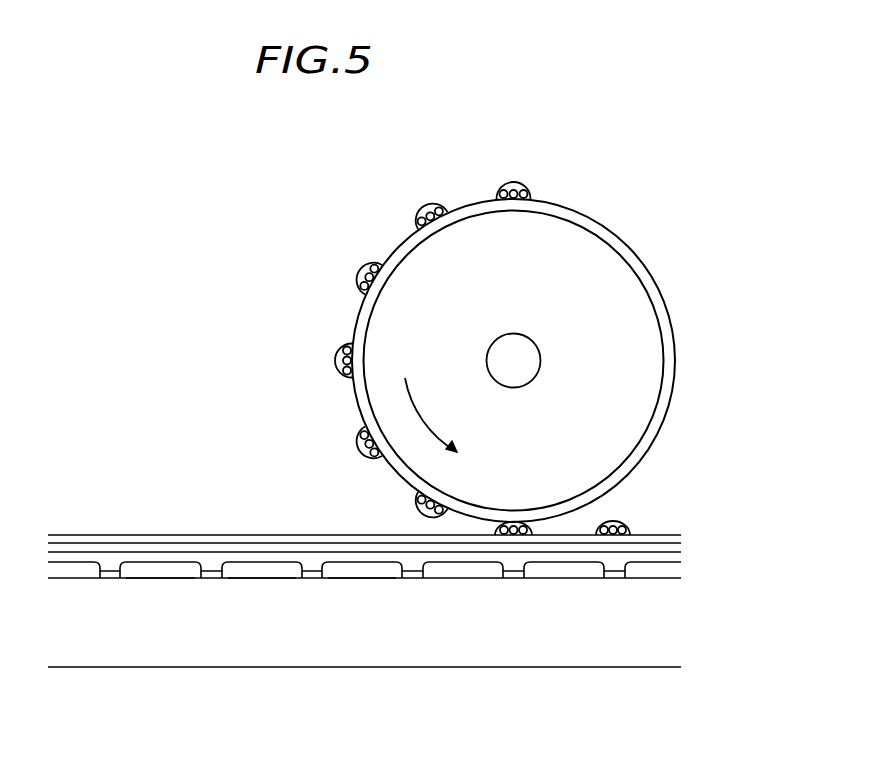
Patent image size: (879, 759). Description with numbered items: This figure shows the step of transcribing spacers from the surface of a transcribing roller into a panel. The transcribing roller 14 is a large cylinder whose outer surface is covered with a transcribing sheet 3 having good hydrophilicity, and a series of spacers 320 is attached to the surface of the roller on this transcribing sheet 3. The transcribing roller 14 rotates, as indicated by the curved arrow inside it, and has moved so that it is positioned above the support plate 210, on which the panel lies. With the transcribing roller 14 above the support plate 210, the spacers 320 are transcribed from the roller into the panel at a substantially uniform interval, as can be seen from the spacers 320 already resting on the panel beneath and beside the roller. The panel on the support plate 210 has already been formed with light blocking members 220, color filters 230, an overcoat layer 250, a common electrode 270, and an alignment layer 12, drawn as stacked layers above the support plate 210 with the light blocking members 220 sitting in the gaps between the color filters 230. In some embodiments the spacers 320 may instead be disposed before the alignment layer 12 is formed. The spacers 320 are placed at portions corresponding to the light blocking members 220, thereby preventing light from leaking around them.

The transcribing sheet 3 is at (651, 292).
The transcribing roller 14 is at (630, 372).
The spacers 320 is at (336, 359).
The support plate 210 is at (657, 623).
The light blocking members 220 is at (312, 573).
The color filters 230 is at (243, 572).
The overcoat layer 250 is at (349, 560).
The common electrode 270 is at (372, 548).
The alignment layer 12 is at (460, 538).